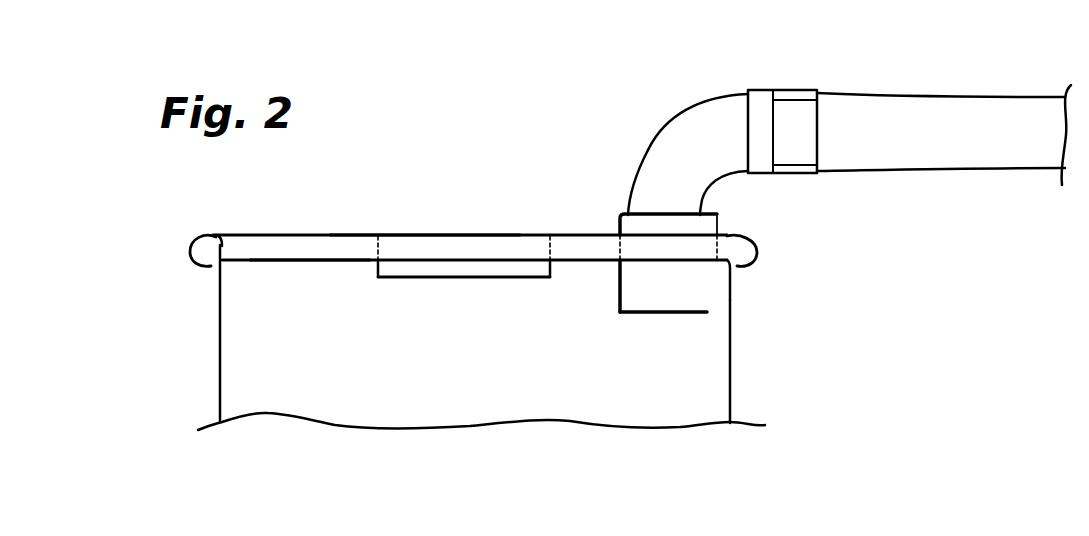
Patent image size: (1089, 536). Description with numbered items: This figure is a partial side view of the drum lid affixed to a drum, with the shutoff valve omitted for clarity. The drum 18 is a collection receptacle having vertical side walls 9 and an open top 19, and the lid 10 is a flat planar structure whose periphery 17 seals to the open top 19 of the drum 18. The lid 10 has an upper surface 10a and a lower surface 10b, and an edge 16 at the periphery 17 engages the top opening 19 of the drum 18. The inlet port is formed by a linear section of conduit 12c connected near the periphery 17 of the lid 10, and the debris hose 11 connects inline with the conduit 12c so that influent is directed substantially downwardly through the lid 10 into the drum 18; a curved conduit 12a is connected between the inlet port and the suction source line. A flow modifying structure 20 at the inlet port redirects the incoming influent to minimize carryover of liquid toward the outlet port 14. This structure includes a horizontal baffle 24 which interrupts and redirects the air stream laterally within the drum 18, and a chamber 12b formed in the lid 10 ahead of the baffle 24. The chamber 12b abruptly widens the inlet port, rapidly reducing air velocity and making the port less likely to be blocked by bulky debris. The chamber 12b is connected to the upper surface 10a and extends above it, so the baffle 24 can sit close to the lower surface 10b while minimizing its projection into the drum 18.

The vertical side walls 9 is at (221, 348).
The lid 10 is at (437, 251).
The upper surface 10a is at (322, 235).
The lower surface 10b is at (303, 262).
The debris hose 11 is at (928, 97).
The curved conduit 12a is at (670, 118).
The chamber 12b is at (640, 228).
The conduit 12c is at (729, 207).
The outlet port 14 is at (527, 223).
The edge 16 is at (215, 234).
The periphery 17 is at (748, 233).
The drum 18 is at (516, 337).
The open top 19 is at (735, 282).
The flow modifying structure 20 is at (590, 310).
The horizontal baffle 24 is at (618, 280).